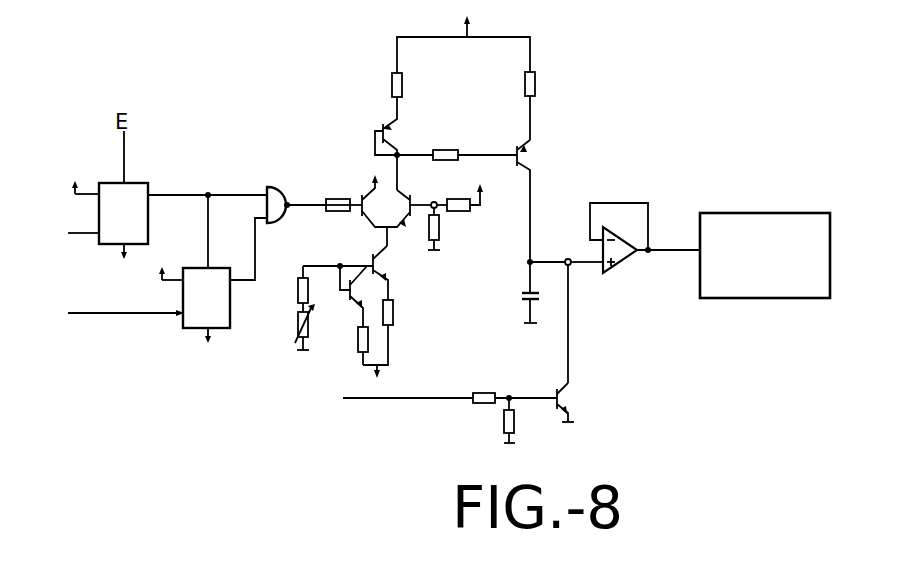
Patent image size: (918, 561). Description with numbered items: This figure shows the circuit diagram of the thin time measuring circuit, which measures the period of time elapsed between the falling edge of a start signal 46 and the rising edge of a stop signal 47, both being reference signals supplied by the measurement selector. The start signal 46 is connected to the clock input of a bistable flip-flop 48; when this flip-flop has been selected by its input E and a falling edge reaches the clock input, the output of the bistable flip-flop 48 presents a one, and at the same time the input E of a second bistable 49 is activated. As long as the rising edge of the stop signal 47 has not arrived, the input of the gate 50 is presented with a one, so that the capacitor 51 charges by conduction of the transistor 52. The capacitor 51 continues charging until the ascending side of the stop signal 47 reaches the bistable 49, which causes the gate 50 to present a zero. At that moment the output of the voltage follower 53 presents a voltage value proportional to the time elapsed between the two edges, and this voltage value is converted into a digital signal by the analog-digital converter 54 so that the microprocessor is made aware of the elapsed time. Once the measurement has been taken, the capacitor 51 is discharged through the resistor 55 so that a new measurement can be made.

The start signal 46 is at (80, 222).
The stop signal 47 is at (107, 314).
The bistable flip-flop 48 is at (131, 183).
The bistable 49 is at (221, 322).
The gate 50 is at (280, 186).
The capacitor 51 is at (525, 300).
The transistor 52 is at (533, 156).
The voltage follower 53 is at (618, 276).
The analog-digital converter 54 is at (758, 300).
The resistor 55 is at (479, 404).